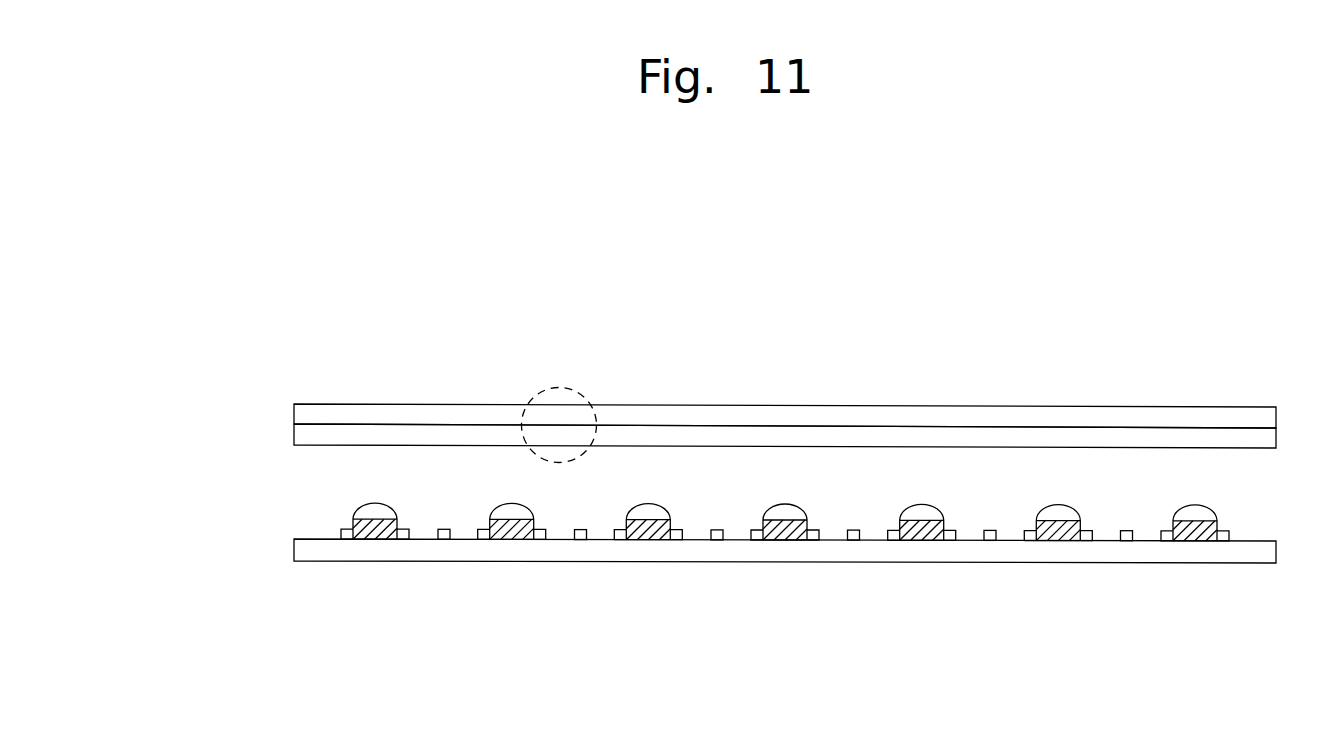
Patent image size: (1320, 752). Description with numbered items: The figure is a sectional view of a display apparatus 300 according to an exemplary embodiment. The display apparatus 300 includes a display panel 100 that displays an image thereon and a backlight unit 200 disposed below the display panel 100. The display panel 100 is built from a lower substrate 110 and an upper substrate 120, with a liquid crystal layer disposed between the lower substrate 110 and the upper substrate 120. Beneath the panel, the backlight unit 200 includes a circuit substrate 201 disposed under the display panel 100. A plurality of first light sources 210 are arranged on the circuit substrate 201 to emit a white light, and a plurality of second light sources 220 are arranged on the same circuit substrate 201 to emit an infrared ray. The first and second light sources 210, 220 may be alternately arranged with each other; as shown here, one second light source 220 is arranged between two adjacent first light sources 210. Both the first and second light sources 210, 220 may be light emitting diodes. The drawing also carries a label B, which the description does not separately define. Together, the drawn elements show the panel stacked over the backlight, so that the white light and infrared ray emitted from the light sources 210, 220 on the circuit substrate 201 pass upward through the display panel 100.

The display apparatus 300 is at (1152, 342).
The display panel 100 is at (216, 402).
The lower substrate 110 is at (296, 440).
The upper substrate 120 is at (296, 409).
The backlight unit 200 is at (266, 501).
The circuit substrate 201 is at (855, 563).
The first light sources 210 is at (372, 540).
The second light sources 220 is at (444, 540).
The enlarged detail region B is at (572, 389).